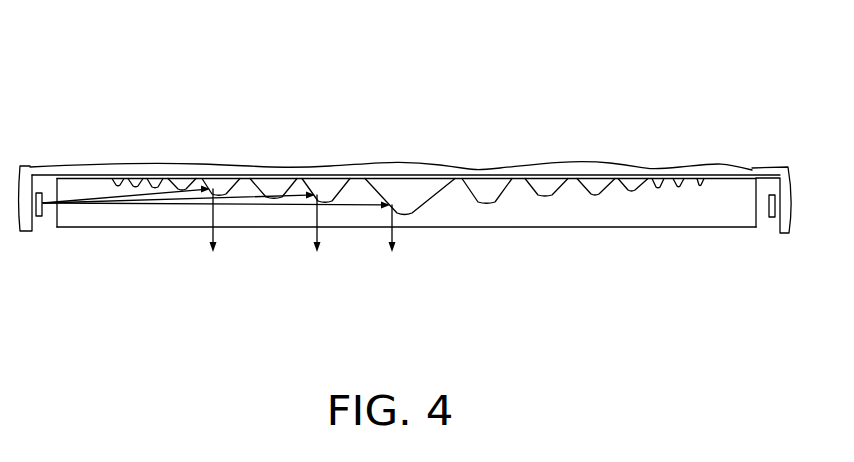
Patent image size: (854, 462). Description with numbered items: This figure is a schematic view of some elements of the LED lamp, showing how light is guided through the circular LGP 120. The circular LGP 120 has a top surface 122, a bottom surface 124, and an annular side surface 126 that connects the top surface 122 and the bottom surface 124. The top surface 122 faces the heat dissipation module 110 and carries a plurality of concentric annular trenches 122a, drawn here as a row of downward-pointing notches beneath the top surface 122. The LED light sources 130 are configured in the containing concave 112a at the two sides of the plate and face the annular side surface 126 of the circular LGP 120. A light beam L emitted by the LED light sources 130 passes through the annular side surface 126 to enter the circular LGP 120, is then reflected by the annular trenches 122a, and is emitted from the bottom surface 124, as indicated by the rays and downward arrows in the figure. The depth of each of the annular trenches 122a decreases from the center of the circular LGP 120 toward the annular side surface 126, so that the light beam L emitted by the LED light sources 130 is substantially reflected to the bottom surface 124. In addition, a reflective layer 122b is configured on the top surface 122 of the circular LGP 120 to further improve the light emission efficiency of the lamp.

The heat dissipation module 110 is at (403, 170).
The containing concave 112a is at (49, 179).
The circular LGP 120 is at (406, 244).
The top surface 122 is at (406, 189).
The annular trenches 122a is at (547, 196).
The reflective layer 122b is at (457, 179).
The bottom surface 124 is at (160, 231).
The annular side surface 126 is at (756, 186).
The LED light sources 130 is at (40, 218).
The light beam L is at (392, 220).